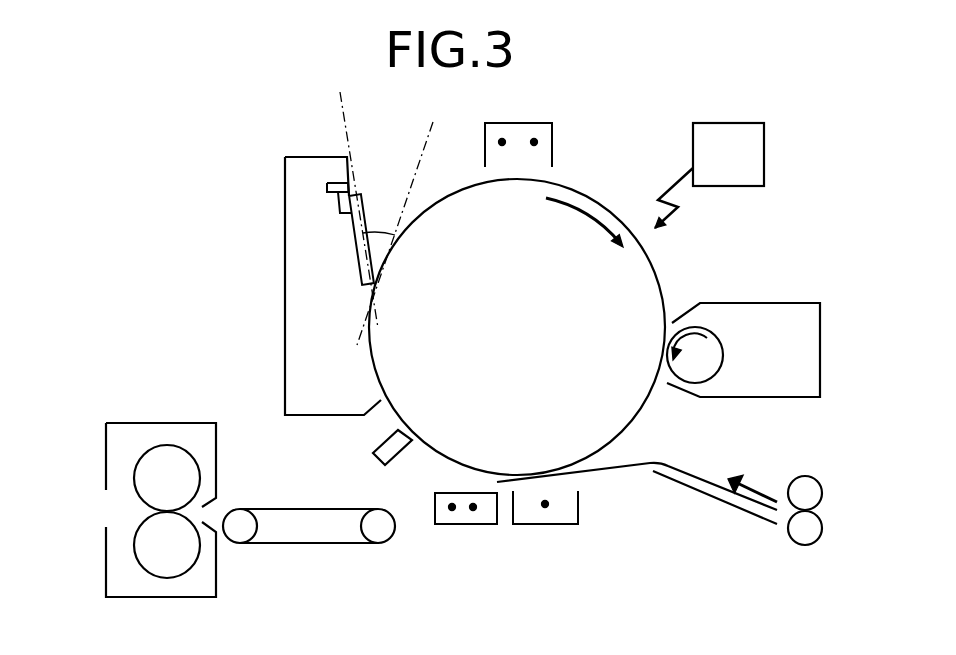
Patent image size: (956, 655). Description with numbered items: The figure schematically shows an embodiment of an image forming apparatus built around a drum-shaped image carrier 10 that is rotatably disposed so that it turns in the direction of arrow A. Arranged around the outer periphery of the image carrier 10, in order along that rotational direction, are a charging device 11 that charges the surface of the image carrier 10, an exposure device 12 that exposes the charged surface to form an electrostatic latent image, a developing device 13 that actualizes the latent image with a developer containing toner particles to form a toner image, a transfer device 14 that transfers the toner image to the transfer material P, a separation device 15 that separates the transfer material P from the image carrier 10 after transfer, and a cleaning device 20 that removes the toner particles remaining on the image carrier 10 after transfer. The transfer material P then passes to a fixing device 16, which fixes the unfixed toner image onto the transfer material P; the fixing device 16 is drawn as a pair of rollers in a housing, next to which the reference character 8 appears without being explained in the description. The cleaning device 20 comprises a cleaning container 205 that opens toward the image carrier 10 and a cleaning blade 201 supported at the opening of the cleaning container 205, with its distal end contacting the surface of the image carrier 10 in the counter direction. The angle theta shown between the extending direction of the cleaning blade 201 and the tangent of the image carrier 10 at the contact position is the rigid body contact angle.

The fixing rollers 8 is at (149, 511).
The image carrier 10 is at (585, 190).
The charging device 11 is at (528, 123).
The exposure device 12 is at (733, 123).
The developing device 13 is at (783, 303).
The transfer device 14 is at (565, 524).
The separation device 15 is at (462, 524).
The fixing device 16 is at (156, 481).
The cleaning device 20 is at (273, 253).
The cleaning blade 201 is at (358, 246).
The cleaning container 205 is at (285, 213).
The transfer material P is at (700, 472).